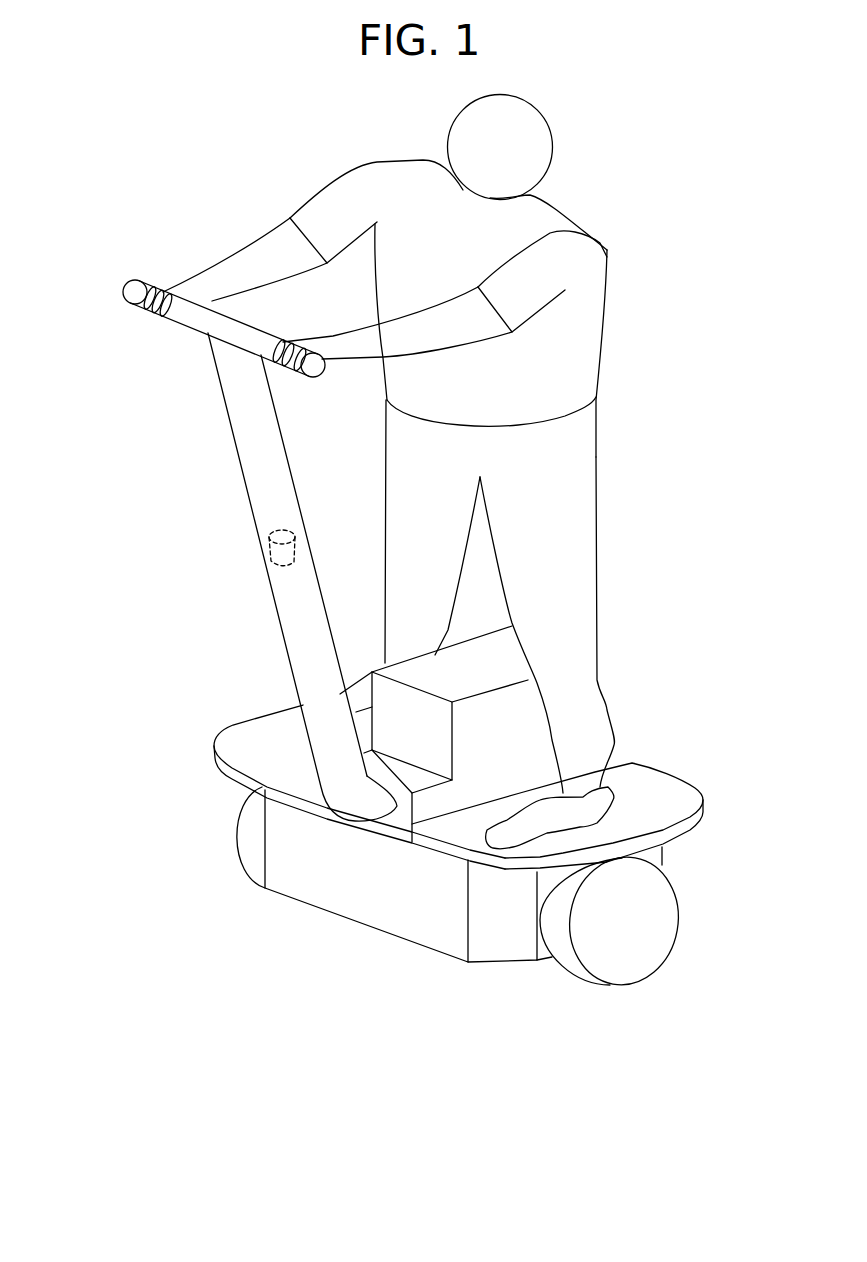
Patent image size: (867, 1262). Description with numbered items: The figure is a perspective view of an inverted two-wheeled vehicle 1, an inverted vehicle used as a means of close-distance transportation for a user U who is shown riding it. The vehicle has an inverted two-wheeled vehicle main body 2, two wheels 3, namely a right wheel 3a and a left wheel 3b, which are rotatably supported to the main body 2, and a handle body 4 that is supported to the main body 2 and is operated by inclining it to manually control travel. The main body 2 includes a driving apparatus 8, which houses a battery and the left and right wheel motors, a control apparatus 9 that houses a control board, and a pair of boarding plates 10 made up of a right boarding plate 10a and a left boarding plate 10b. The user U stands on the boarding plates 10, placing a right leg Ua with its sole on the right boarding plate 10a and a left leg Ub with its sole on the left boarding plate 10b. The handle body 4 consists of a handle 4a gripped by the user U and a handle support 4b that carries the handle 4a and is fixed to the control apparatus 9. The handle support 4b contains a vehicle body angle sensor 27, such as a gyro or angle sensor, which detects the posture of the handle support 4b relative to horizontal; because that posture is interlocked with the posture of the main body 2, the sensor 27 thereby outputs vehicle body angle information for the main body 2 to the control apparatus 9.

The inverted two-wheeled vehicle 1 is at (130, 1044).
The inverted two-wheeled vehicle main body 2 is at (332, 902).
The wheels 3 is at (397, 922).
The right wheel 3a is at (250, 845).
The left wheel 3b is at (655, 950).
The handle body 4 is at (99, 755).
The handle 4a is at (192, 317).
The handle support 4b is at (292, 610).
The driving apparatus 8 is at (430, 935).
The control apparatus 9 is at (475, 662).
The boarding plates 10 is at (421, 779).
The right boarding plate 10a is at (223, 763).
The left boarding plate 10b is at (683, 797).
The vehicle body angle sensor 27 is at (297, 547).
The user U is at (587, 267).
The right leg Ua is at (395, 605).
The left leg Ub is at (577, 587).